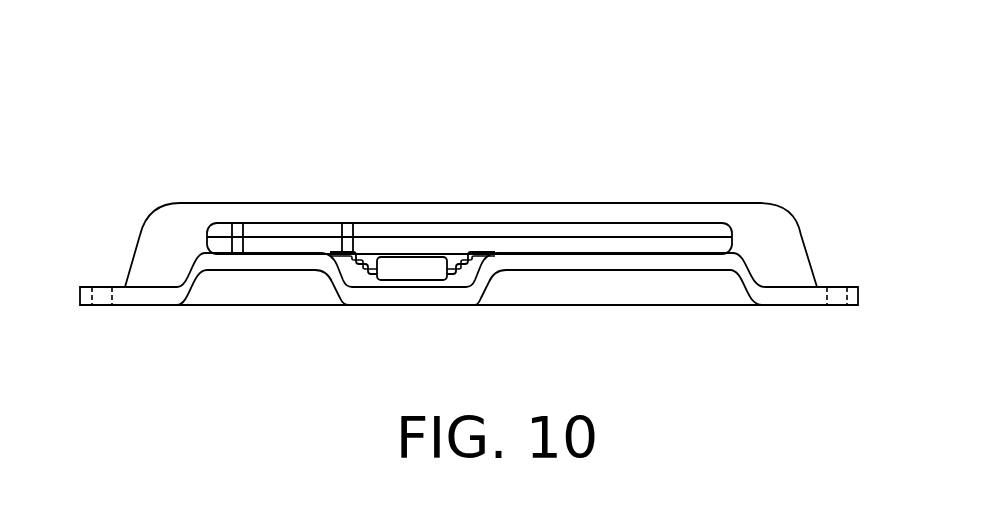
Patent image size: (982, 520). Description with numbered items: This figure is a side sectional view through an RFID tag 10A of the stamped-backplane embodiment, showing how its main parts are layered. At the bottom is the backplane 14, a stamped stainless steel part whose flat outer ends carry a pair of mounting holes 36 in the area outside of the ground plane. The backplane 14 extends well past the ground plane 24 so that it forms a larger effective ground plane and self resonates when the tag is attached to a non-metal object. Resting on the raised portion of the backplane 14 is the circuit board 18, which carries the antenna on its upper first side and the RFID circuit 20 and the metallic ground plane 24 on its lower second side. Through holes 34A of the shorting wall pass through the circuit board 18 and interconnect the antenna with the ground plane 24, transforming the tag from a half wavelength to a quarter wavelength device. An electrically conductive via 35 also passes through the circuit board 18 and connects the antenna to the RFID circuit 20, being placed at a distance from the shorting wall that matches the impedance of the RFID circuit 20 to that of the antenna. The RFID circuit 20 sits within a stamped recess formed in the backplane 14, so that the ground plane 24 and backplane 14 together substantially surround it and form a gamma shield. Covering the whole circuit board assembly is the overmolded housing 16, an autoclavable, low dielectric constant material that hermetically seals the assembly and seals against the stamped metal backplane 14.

The module assembly 10A is at (270, 85).
The overmolded housing 16 is at (198, 203).
The circuit board 18 is at (700, 232).
The through holes 34A is at (245, 233).
The electrically conductive via 35 is at (357, 235).
The mounting holes 36 is at (105, 287).
The backplane 14 is at (800, 306).
The ground plane 24 is at (618, 254).
The RFID circuit 20 is at (403, 280).